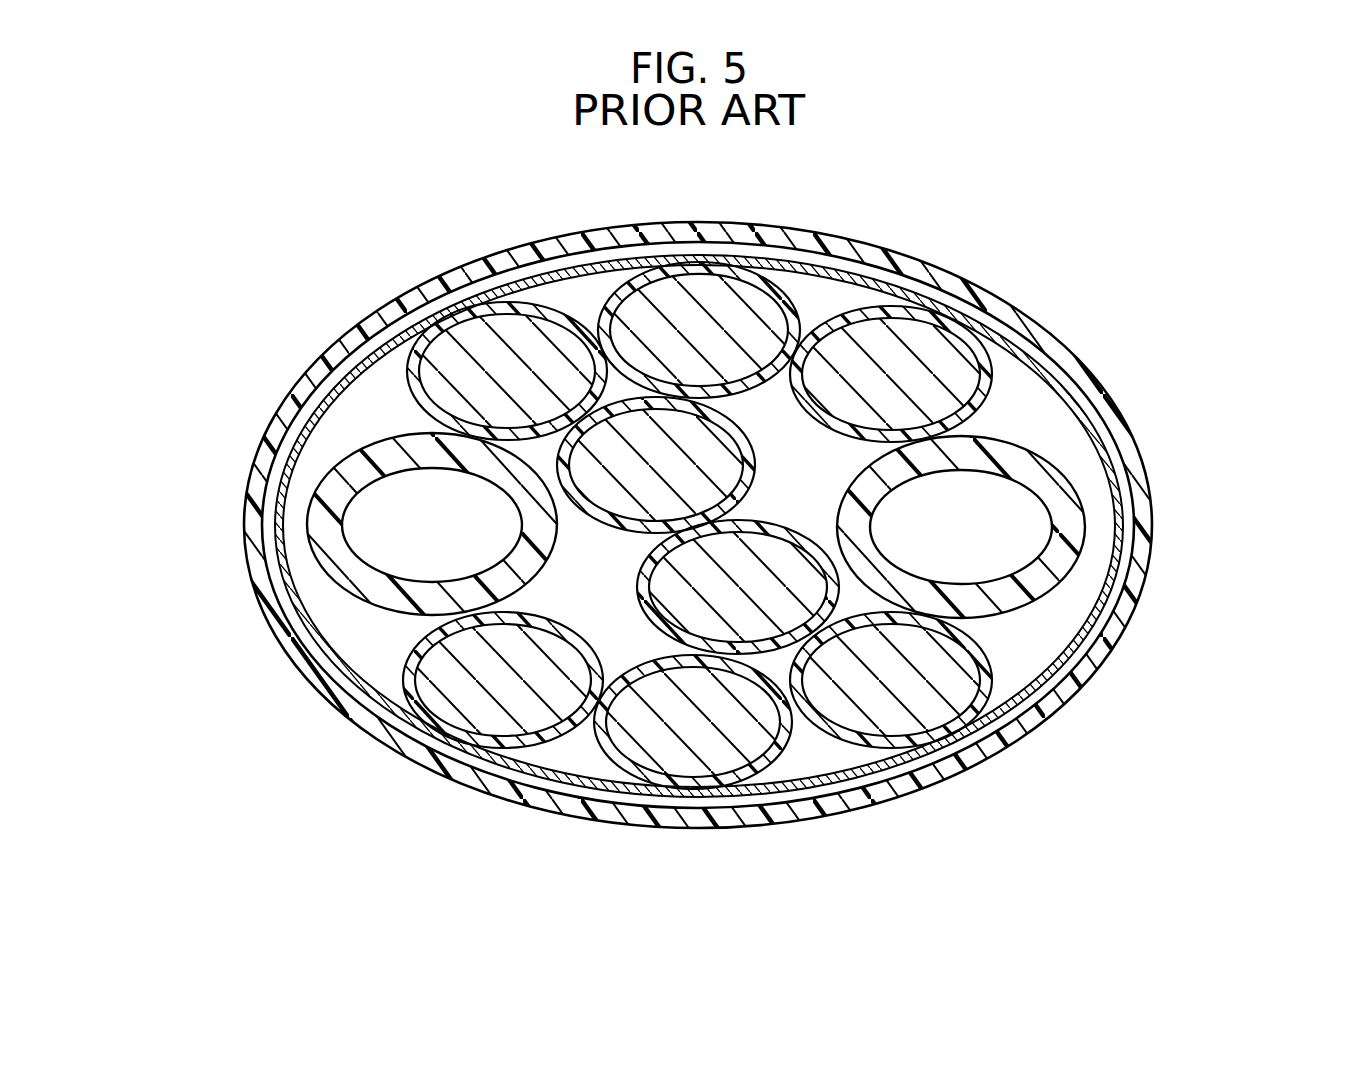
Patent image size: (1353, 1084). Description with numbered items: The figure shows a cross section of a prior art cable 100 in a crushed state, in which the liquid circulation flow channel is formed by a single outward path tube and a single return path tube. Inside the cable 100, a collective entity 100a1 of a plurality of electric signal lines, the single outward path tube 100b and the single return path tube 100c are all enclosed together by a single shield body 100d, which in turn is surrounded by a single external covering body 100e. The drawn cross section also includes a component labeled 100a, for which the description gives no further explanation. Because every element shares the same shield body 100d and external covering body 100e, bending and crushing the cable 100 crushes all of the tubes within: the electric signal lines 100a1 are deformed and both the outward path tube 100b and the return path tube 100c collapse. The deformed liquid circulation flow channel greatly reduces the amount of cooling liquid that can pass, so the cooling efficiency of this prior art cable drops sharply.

The cable 100 is at (400, 226).
The conductor 100a is at (817, 747).
The electric signal lines 100a1 is at (609, 749).
The outward path tube 100b is at (307, 498).
The return path tube 100c is at (1075, 522).
The shield body 100d is at (918, 287).
The external covering body 100e is at (840, 247).